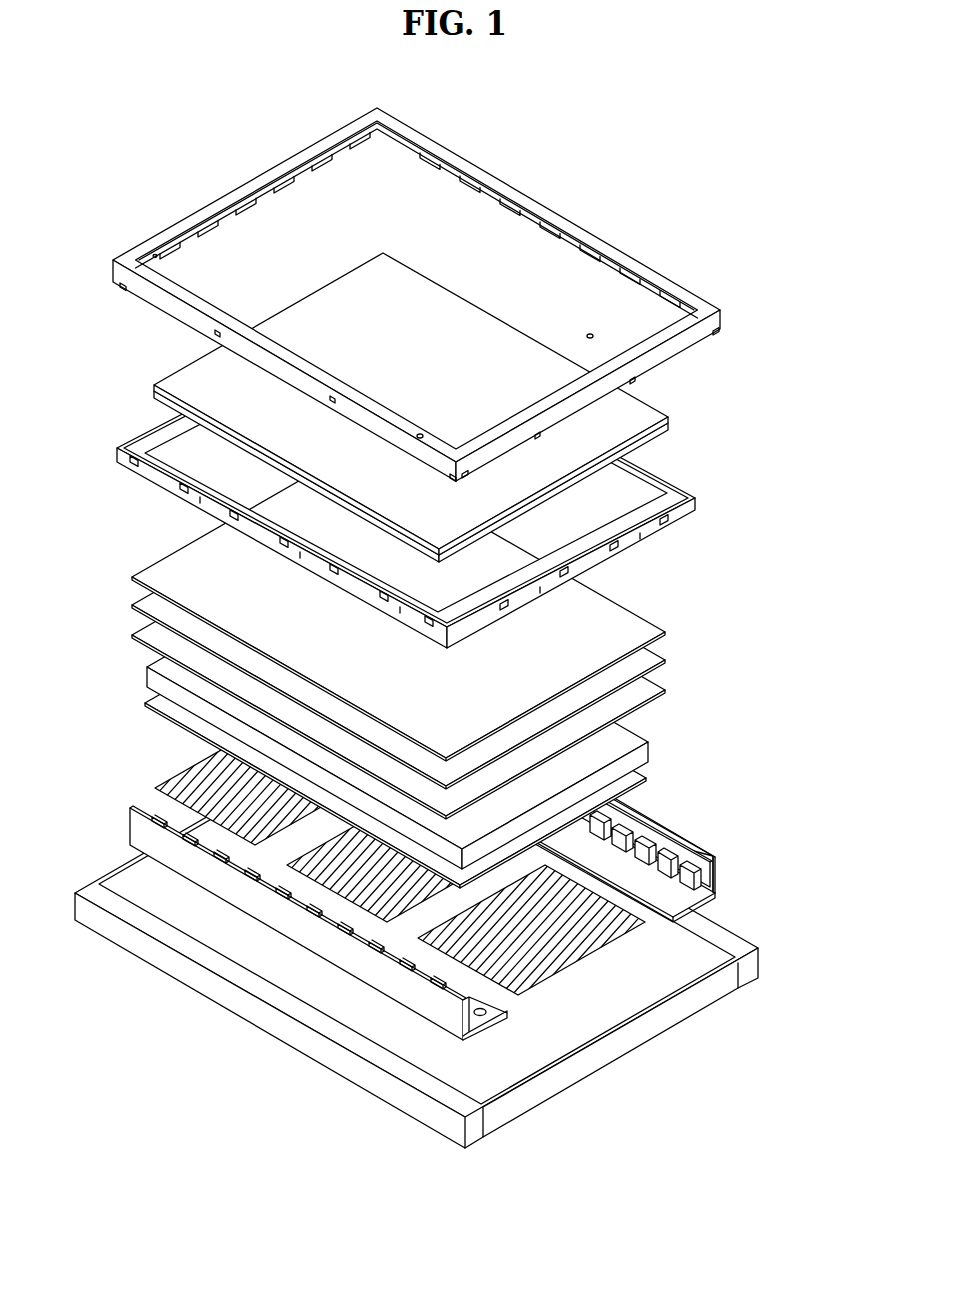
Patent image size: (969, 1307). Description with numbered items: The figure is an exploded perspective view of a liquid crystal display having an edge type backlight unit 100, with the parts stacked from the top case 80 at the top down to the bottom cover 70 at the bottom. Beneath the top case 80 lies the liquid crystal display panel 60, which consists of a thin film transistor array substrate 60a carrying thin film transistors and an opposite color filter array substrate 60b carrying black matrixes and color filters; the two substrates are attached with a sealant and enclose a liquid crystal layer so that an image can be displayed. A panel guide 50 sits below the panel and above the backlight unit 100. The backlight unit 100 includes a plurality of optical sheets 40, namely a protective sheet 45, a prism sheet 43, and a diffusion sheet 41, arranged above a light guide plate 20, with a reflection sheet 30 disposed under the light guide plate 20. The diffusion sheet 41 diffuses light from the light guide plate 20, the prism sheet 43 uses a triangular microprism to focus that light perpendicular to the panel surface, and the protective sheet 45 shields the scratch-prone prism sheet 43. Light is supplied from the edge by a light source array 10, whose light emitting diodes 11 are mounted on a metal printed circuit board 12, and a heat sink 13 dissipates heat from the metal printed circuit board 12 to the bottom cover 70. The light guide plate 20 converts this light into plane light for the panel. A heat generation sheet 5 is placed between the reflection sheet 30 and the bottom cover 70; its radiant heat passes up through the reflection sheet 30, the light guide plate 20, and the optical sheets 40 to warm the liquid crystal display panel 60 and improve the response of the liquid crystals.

The backlight unit 100 is at (440, 628).
The top case 80 is at (688, 293).
The liquid crystal display panel 60 is at (470, 407).
The thin film transistor array substrate 60a is at (671, 428).
The color filter array substrate 60b is at (671, 419).
The panel guide 50 is at (641, 483).
The optical sheets 40 is at (448, 635).
The protective sheet 45 is at (658, 630).
The prism sheet 43 is at (658, 660).
The diffusion sheet 41 is at (658, 688).
The light guide plate 20 is at (641, 738).
The reflection sheet 30 is at (641, 774).
The light source array 10 is at (657, 853).
The heat sink 13 is at (667, 826).
The metal printed circuit board 12 is at (683, 838).
The light emitting diodes 11 is at (692, 866).
The bottom cover 70 is at (722, 919).
The heat generation sheet 5 is at (557, 958).